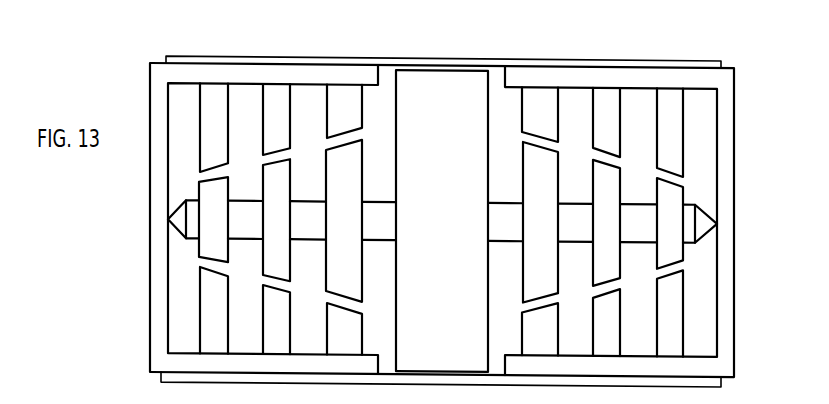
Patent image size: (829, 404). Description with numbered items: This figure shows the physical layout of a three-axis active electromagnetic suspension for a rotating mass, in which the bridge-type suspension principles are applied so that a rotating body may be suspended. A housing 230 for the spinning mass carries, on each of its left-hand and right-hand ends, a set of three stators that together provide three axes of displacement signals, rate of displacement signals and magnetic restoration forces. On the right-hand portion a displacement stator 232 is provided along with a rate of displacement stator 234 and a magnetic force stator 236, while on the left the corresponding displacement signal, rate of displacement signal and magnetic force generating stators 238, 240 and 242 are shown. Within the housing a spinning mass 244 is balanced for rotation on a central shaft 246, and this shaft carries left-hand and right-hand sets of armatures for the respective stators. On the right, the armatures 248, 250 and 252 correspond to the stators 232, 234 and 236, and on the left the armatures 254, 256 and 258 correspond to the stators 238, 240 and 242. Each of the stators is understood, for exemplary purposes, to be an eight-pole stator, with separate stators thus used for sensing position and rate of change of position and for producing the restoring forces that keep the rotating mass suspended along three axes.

The housing 230 is at (153, 68).
The displacement stator 232 is at (672, 97).
The rate of displacement stator 234 is at (607, 97).
The magnetic force stator 236 is at (545, 97).
The displacement signal stator 238 is at (210, 92).
The rate of displacement signal stator 240 is at (275, 93).
The magnetic force generating stator 242 is at (340, 95).
The spinning mass 244 is at (407, 88).
The central shaft 246 is at (508, 200).
The armature 248 is at (670, 223).
The armature 250 is at (606, 223).
The armature 252 is at (540, 222).
The armature 254 is at (213, 219).
The armature 256 is at (276, 220).
The armature 258 is at (344, 221).